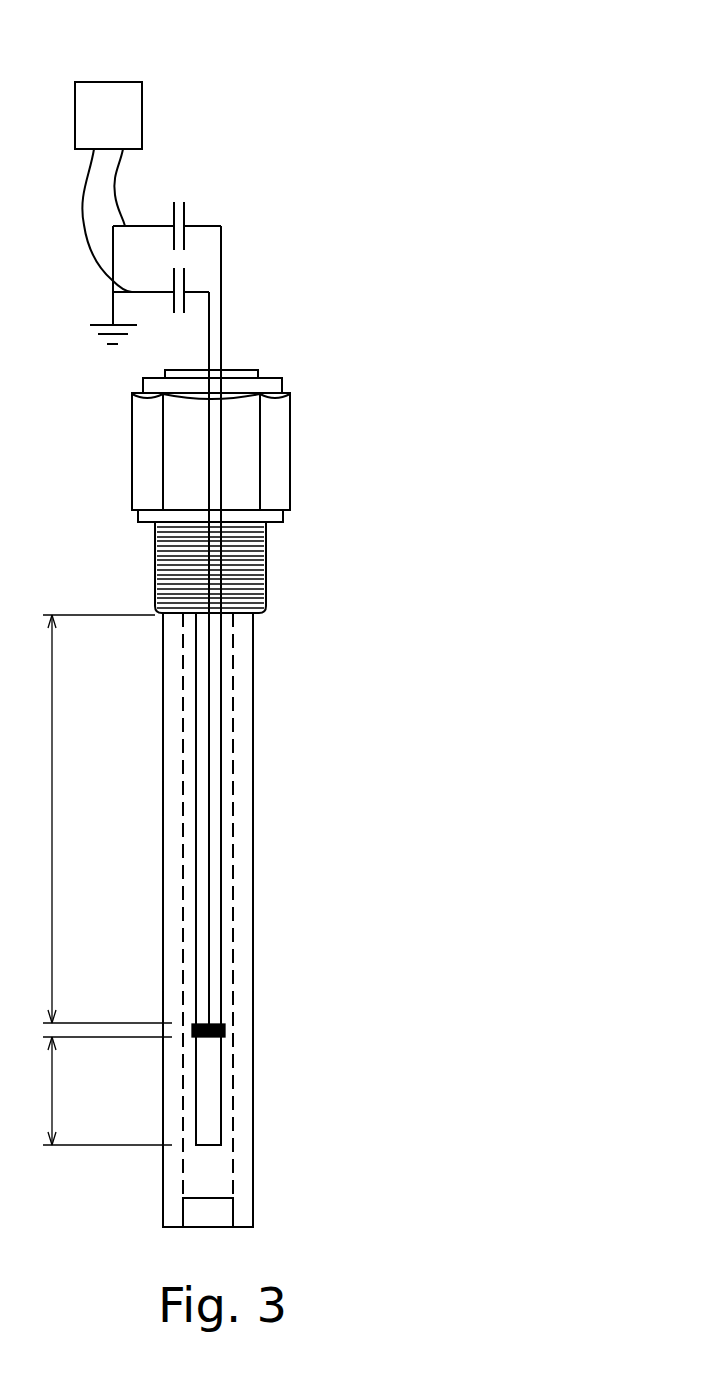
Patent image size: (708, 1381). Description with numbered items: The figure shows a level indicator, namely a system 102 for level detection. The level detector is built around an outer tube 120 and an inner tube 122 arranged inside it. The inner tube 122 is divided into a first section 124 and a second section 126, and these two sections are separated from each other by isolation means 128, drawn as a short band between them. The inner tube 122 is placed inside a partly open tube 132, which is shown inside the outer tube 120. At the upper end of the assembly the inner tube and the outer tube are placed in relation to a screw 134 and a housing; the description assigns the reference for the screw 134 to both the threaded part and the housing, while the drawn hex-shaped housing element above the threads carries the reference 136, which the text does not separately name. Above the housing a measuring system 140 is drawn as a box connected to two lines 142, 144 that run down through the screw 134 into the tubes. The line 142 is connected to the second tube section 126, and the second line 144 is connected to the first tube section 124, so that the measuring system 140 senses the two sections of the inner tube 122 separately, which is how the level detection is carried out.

The system for level detection 102 is at (293, 86).
The outer tube 120 is at (253, 655).
The inner tube 122 is at (222, 713).
The first section 124 is at (222, 1095).
The second section 126 is at (222, 762).
The isolation means 128 is at (225, 1031).
The partly open tube 132 is at (182, 778).
The screw 134 is at (155, 592).
The hex nut 136 is at (290, 413).
The measuring system 140 is at (142, 115).
The line 142 is at (221, 253).
The second line 144 is at (209, 347).